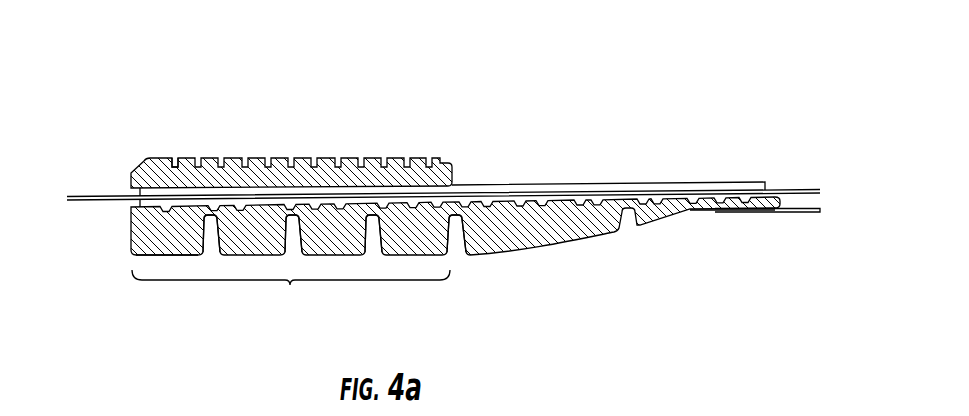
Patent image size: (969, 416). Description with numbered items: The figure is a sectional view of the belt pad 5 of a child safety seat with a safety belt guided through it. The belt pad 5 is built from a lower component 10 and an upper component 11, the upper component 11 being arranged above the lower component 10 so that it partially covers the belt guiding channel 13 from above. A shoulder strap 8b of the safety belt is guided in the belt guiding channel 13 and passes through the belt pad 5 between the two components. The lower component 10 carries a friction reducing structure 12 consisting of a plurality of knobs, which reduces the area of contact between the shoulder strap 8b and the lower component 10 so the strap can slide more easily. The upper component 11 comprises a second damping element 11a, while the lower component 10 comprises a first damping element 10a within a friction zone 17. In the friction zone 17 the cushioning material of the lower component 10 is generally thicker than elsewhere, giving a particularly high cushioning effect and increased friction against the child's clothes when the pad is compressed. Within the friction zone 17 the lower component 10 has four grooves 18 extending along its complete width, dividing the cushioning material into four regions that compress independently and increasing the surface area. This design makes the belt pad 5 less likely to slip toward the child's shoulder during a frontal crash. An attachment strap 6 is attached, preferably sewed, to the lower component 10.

The belt pad 5 is at (526, 63).
The attachment strap 6 is at (803, 211).
The shoulder strap 8b is at (100, 197).
The lower component 10 is at (562, 264).
The first damping element 10a is at (162, 252).
The upper component 11 is at (206, 120).
The second damping element 11a is at (160, 157).
The friction reducing structure 12 is at (118, 209).
The belt guiding channel 13 is at (117, 189).
The friction zone 17 is at (291, 295).
The grooves 18 is at (292, 243).